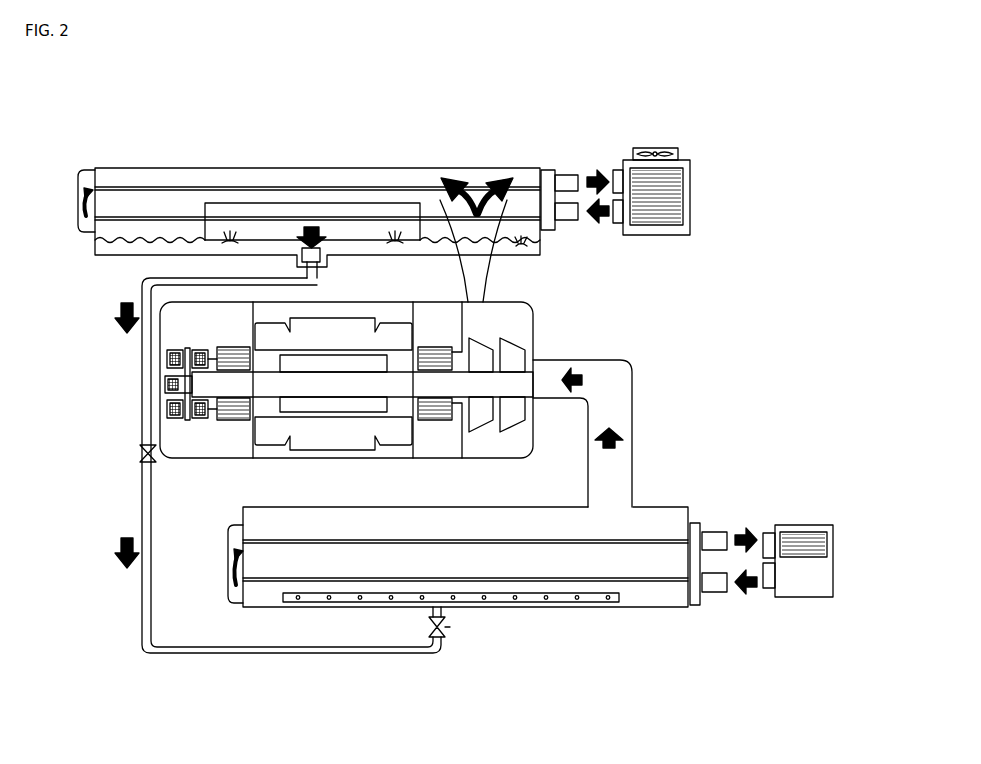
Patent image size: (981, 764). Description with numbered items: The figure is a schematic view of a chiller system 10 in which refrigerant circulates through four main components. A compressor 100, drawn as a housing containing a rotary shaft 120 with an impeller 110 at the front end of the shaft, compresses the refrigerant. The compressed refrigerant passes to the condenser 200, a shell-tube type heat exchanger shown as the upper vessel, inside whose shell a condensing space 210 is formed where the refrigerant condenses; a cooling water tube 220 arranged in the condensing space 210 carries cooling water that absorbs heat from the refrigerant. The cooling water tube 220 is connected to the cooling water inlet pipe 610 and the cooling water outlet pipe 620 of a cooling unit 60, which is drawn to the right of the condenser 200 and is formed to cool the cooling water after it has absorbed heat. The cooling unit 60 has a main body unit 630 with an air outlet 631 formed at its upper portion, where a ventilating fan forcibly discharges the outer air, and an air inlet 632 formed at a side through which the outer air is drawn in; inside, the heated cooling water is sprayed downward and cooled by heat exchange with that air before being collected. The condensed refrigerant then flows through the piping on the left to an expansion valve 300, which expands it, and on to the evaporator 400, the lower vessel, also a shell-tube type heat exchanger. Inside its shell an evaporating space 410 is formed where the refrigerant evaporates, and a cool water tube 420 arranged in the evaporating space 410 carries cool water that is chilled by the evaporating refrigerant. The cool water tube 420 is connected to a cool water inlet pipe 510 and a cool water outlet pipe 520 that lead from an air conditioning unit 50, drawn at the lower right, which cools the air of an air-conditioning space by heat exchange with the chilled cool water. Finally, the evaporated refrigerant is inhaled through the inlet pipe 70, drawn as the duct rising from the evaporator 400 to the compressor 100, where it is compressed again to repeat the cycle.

The chiller system 10 is at (578, 122).
The condenser 200 is at (467, 153).
The condensing space 210 is at (522, 241).
The cooling water tube 220 is at (568, 218).
The compressor 100 is at (540, 331).
The impeller 110 is at (503, 343).
The rotary shaft 120 is at (340, 378).
The cooling unit 60 is at (694, 206).
The cooling water inlet pipe 610 is at (618, 168).
The cooling water outlet pipe 620 is at (618, 225).
The main body unit 630 is at (688, 160).
The air outlet 631 is at (656, 148).
The air inlet 632 is at (657, 226).
The inlet pipe 70 is at (634, 412).
The expansion valve 300 is at (141, 456).
The evaporator 400 is at (527, 605).
The evaporating space 410 is at (648, 596).
The cool water tube 420 is at (714, 594).
The air conditioning unit 50 is at (794, 522).
The cool water inlet pipe 510 is at (765, 531).
The cool water outlet pipe 520 is at (768, 589).